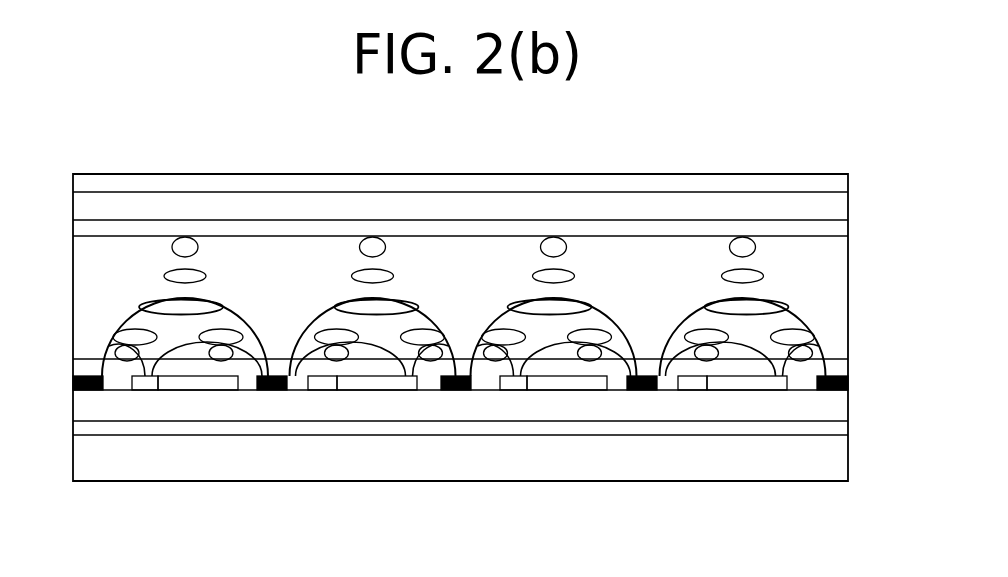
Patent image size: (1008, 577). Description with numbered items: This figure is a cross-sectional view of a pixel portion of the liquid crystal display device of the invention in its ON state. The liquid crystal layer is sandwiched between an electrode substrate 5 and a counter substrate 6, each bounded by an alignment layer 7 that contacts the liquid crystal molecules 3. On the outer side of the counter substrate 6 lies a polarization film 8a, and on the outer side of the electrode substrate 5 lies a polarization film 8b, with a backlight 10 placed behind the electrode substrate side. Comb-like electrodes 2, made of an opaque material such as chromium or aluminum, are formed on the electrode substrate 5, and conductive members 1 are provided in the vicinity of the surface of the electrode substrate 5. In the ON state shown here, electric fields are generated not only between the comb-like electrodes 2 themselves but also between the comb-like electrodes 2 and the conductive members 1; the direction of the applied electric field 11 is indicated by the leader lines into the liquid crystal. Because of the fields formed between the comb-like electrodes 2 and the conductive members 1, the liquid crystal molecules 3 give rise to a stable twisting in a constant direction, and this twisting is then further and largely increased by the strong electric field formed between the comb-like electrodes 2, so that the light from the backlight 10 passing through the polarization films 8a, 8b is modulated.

The conductive member 1 is at (185, 383).
The comb-like electrode 2 is at (277, 392).
The liquid crystal molecule 3 is at (353, 268).
The electrode substrate 5 is at (675, 408).
The counter substrate 6 is at (452, 205).
The alignment layer 7 is at (842, 228).
The polarization film 8a is at (695, 172).
The polarization film 8b is at (558, 425).
The backlight 10 is at (433, 481).
The direction of applied electric field 11 is at (315, 348).